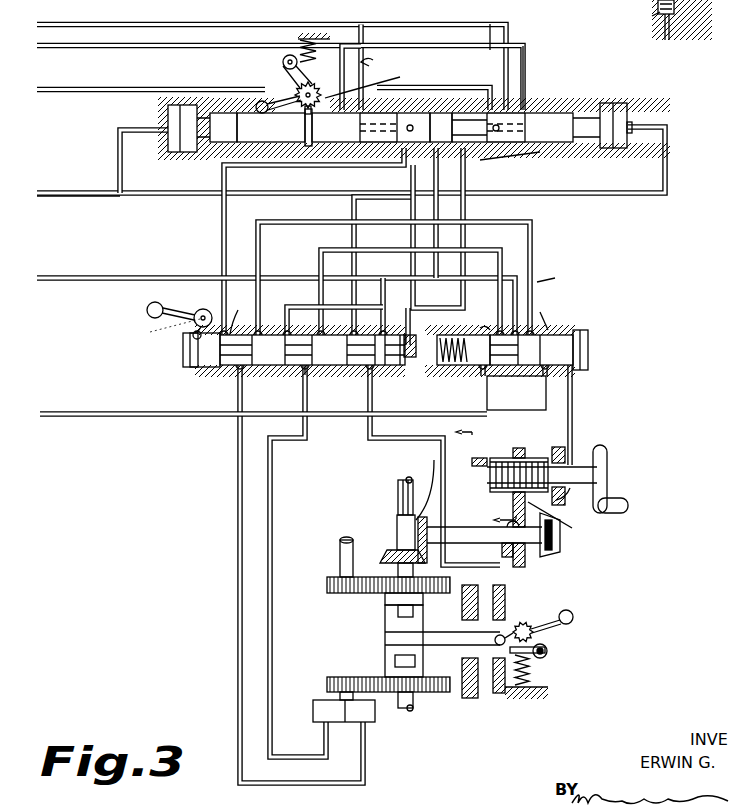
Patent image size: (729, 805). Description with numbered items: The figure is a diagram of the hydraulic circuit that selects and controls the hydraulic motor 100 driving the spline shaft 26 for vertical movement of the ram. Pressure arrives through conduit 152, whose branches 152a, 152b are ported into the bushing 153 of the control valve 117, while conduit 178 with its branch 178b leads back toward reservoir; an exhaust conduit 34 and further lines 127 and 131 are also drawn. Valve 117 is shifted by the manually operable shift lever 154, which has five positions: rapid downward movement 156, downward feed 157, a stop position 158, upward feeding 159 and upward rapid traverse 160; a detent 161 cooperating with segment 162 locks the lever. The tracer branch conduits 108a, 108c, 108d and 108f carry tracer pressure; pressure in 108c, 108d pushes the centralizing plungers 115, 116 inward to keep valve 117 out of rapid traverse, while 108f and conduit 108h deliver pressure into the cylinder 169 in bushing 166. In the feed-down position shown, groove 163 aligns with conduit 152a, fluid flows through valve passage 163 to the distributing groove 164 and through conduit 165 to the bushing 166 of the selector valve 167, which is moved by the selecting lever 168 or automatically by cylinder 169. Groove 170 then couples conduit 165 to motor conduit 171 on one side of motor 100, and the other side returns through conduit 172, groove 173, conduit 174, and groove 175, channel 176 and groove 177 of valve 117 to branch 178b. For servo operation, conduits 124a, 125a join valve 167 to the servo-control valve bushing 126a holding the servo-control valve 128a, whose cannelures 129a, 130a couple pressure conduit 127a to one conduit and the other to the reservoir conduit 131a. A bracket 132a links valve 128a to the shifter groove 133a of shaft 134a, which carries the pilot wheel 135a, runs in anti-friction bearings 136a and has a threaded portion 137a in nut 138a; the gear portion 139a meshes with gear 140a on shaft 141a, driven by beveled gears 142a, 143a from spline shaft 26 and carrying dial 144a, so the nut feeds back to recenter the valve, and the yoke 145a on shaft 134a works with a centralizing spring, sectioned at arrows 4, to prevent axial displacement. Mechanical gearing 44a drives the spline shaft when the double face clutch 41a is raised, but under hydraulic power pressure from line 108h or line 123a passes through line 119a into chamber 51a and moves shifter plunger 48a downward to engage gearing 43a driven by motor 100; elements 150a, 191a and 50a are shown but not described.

The conduit 152 is at (75, 20).
The conduit 178 is at (85, 52).
The detent 161 is at (347, 64).
The exhaust conduit 34 is at (126, 86).
The branch conduit 108f is at (418, 200).
The branch conduit 108a is at (674, 168).
The branch conduit 108c is at (118, 170).
The branch conduit 108d is at (40, 204).
The conduit 165 is at (230, 178).
The conduit 108h is at (358, 210).
The pressure chamber or cylinder 169 is at (409, 368).
The conduit 127 is at (79, 272).
The line 123a is at (400, 268).
The conduit 124a is at (536, 248).
The conduit 125a is at (512, 238).
The pressure conduit 127a is at (518, 288).
The servo-control valve bushing 126a is at (538, 324).
The conduit 174 is at (316, 304).
The motor conduit 171 is at (236, 486).
The conduit 172 is at (275, 489).
The yoke or clevis 145a is at (456, 448).
The conduit 131 is at (88, 412).
The bracket 132a is at (574, 410).
The cannelure 130a is at (525, 372).
The plunger 115 is at (187, 156).
The lever position 156 is at (266, 146).
The shift lever 154 is at (309, 146).
The cannelure or groove 163 is at (350, 146).
The distributing cannelure or groove 164 is at (398, 98).
The groove 175 is at (478, 152).
The channel 176 is at (510, 128).
The groove 177 is at (542, 164).
The bushing 153 is at (550, 111).
The control valve 117 is at (585, 112).
The plunger 116 is at (620, 150).
The stop position 158 is at (290, 76).
The lever position 159 is at (280, 62).
The lever position 160 is at (280, 48).
The lever position 157 is at (256, 106).
The segment 162 is at (370, 82).
The branch conduit 152a is at (386, 61).
The branch conduit 152b is at (505, 62).
The branch conduit 178b is at (531, 58).
The valve 150a is at (681, 38).
The conduit 191a is at (660, 18).
The bushing 166 is at (228, 370).
The selector valve 167 is at (192, 374).
The selecting lever 168 is at (146, 310).
The cannelure groove 170 is at (245, 308).
The groove 173 is at (300, 376).
The reservoir conduit 131a is at (486, 392).
The servo-control valve 128a is at (556, 345).
The cannelure 129a is at (490, 330).
The shaft 134a is at (580, 476).
The nut 138a is at (538, 436).
The threaded portion 137a is at (492, 456).
The anti-friction bearings 136a is at (560, 446).
The pilot wheel 135a is at (614, 462).
The shifter groove 133a is at (582, 502).
The external gear portion 139a is at (576, 525).
The gear 140a is at (526, 574).
The dial 144a is at (553, 558).
The shaft 141a is at (441, 552).
The spline shaft 26 is at (412, 462).
The beveled gear 142a is at (434, 460).
The beveled gear 143a is at (388, 542).
The gearing 44a is at (332, 580).
The double face clutch 41a is at (384, 630).
The gearing 43a is at (460, 672).
The shifter plunger 48a is at (466, 620).
The hydraulic motor 100 is at (378, 720).
The line 119a is at (498, 580).
The chamber 51a is at (514, 610).
The lever 50a is at (578, 616).
The section line 4 is at (486, 473).